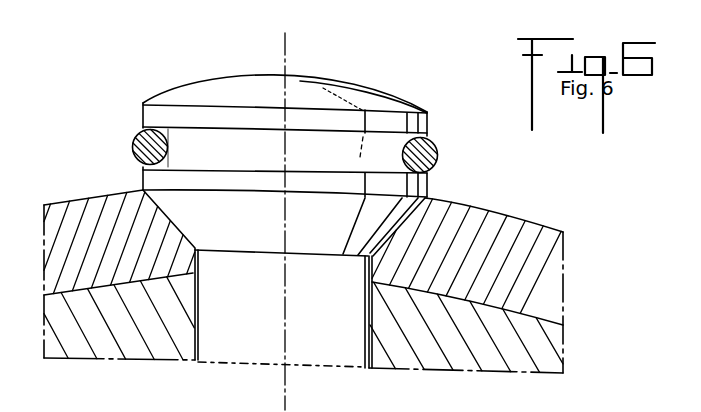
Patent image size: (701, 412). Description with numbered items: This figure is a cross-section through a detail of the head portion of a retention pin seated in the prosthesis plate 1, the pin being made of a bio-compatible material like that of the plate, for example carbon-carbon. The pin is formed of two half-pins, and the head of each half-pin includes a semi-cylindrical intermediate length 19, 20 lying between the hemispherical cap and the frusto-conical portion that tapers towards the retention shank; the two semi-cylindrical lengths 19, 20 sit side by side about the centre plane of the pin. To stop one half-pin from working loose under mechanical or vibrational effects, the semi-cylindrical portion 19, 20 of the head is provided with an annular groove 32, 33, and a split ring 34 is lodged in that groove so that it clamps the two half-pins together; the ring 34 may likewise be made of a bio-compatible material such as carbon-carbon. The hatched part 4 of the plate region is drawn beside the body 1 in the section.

The prosthesis plate 1 is at (553, 268).
The annular insert 4 is at (552, 352).
The semi-cylindrical intermediate length 19 is at (210, 132).
The semi-cylindrical intermediate length 20 is at (313, 133).
The annular groove 32 is at (172, 136).
The annular groove 33 is at (352, 138).
The split ring 34 is at (131, 145).